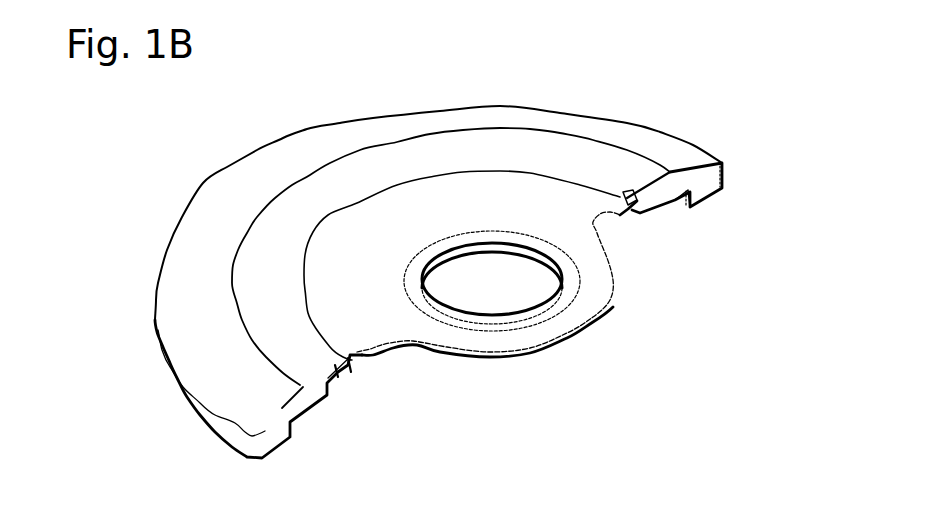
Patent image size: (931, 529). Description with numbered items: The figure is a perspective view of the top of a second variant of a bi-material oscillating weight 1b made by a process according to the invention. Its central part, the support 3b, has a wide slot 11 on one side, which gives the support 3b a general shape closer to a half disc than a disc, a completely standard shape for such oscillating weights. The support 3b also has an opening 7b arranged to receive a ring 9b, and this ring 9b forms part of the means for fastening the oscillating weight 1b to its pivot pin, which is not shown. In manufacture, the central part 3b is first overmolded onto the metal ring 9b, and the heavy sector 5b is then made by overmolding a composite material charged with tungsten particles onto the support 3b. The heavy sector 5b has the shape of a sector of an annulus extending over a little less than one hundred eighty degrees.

The oscillating weight 1b is at (471, 262).
The support 3b is at (373, 307).
The heavy sector 5b is at (263, 188).
The opening 7b is at (505, 235).
The ring 9b is at (442, 247).
The wide slot 11 is at (440, 352).